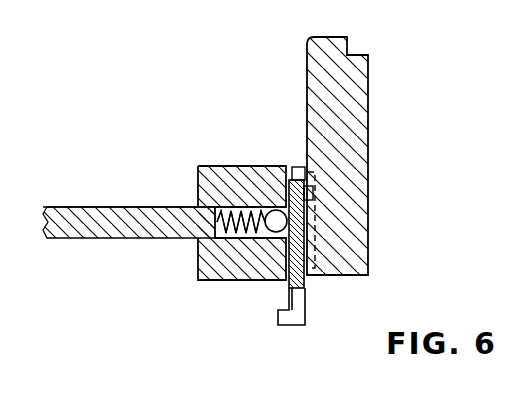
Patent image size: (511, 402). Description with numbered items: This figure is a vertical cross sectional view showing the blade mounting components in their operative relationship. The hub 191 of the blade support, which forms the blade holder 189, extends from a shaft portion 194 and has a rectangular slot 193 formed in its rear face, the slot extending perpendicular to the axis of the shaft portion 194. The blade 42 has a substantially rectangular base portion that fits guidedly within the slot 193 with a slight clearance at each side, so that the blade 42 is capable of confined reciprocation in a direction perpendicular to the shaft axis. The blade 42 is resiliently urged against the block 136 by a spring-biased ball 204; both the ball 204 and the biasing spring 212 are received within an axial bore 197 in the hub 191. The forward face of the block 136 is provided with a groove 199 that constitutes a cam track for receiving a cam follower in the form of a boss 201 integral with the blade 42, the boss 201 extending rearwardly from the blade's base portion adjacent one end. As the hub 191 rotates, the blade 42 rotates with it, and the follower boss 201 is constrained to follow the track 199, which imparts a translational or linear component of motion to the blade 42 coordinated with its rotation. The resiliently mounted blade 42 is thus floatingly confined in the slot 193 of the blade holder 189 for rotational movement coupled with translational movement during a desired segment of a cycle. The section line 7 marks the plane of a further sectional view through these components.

The section line 7- 7 is at (265, 118).
The blade 42 is at (312, 291).
The block 136 is at (362, 183).
The blade holder 189 is at (87, 204).
The hub 191 is at (210, 186).
The rectangular slot 193 is at (296, 168).
The shaft portion 194 is at (91, 235).
The axial bore 197 is at (246, 222).
The groove 199 is at (316, 239).
The boss 201 is at (314, 201).
The spring-biased ball 204 is at (278, 231).
The biasing spring 212 is at (252, 237).